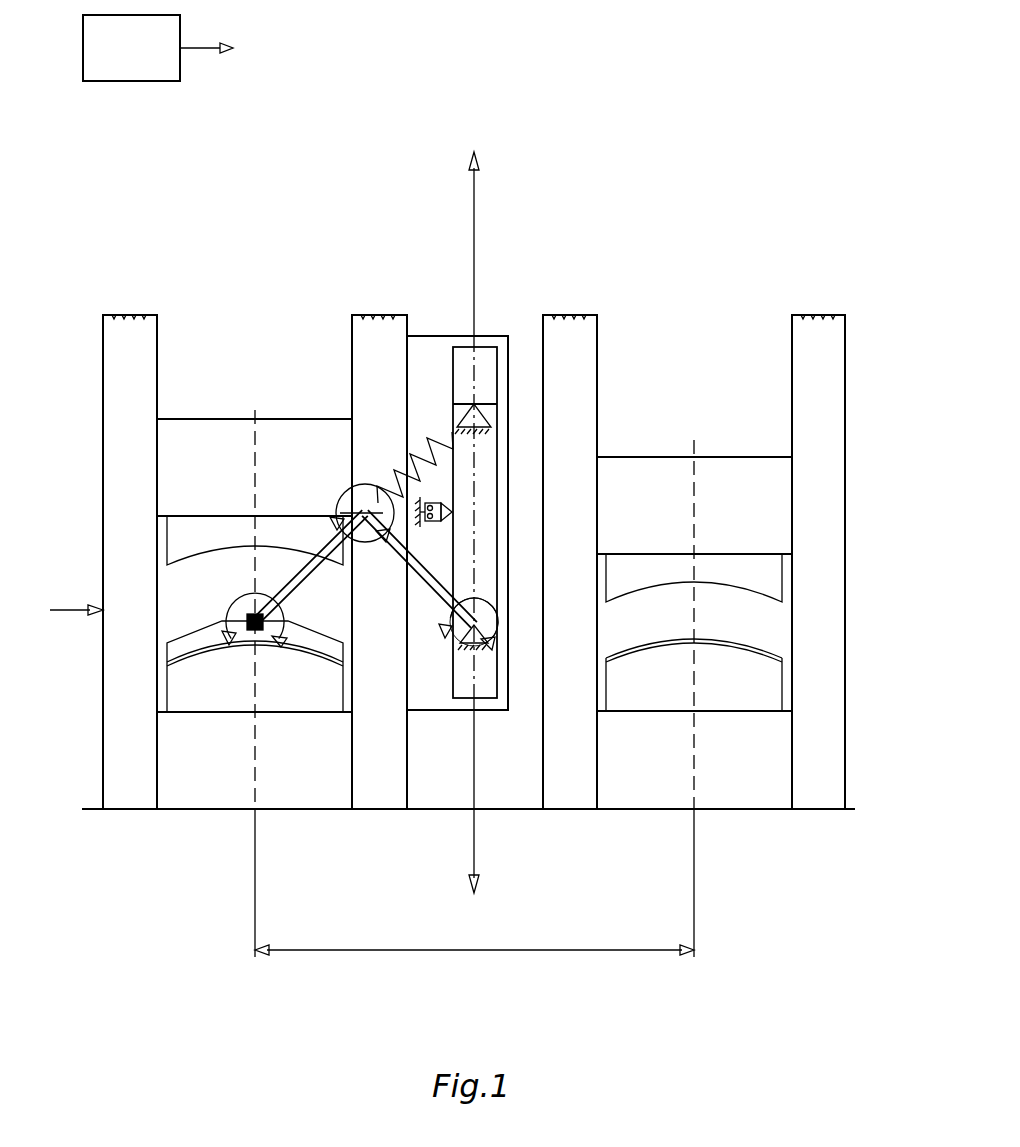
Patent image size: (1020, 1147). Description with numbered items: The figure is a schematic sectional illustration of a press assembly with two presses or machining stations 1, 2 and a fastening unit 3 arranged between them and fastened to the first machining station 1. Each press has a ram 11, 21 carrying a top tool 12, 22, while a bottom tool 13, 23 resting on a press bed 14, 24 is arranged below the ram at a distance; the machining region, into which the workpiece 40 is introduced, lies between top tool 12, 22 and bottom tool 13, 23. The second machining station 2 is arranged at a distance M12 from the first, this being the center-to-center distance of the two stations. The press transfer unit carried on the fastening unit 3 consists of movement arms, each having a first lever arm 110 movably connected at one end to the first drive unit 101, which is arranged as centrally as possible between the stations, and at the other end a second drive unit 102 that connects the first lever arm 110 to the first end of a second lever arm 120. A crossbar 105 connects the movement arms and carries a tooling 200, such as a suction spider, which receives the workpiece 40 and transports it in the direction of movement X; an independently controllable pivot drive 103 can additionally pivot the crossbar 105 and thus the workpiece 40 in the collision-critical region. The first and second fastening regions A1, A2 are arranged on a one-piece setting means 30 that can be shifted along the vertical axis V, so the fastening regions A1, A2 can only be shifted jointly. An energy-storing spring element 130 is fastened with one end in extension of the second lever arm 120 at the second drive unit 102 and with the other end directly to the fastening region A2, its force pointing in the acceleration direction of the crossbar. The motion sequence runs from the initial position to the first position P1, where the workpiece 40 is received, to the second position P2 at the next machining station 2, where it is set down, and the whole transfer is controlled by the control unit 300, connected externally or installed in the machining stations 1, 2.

The control unit 300 is at (158, 48).
The first press 1 is at (237, 278).
The second press 2 is at (682, 322).
The fastening unit 3 is at (440, 358).
The setting means 30 is at (484, 358).
The first fastening region A1 is at (492, 648).
The second fastening region A2 is at (455, 450).
The spring element 130 is at (405, 445).
The tooling 200 is at (307, 640).
The second drive unit 102 is at (345, 492).
The second lever arm 120 is at (297, 585).
The first lever arm 110 is at (415, 565).
The first drive unit 101 is at (476, 597).
The pivot drive 103 is at (230, 608).
The crossbar 105 is at (287, 647).
The ram 11 is at (193, 481).
The top tool 12 is at (193, 541).
The bottom tool 13 is at (205, 673).
The press bed 14 is at (203, 795).
The ram 21 is at (718, 480).
The top tool 22 is at (757, 582).
The bottom tool 23 is at (753, 692).
The press bed 24 is at (767, 793).
The workpiece 40 is at (170, 650).
The direction of movement X is at (64, 615).
The vertical axis V is at (489, 522).
The first position P1 is at (255, 837).
The second position P2 is at (694, 836).
The distance M12 is at (474, 940).